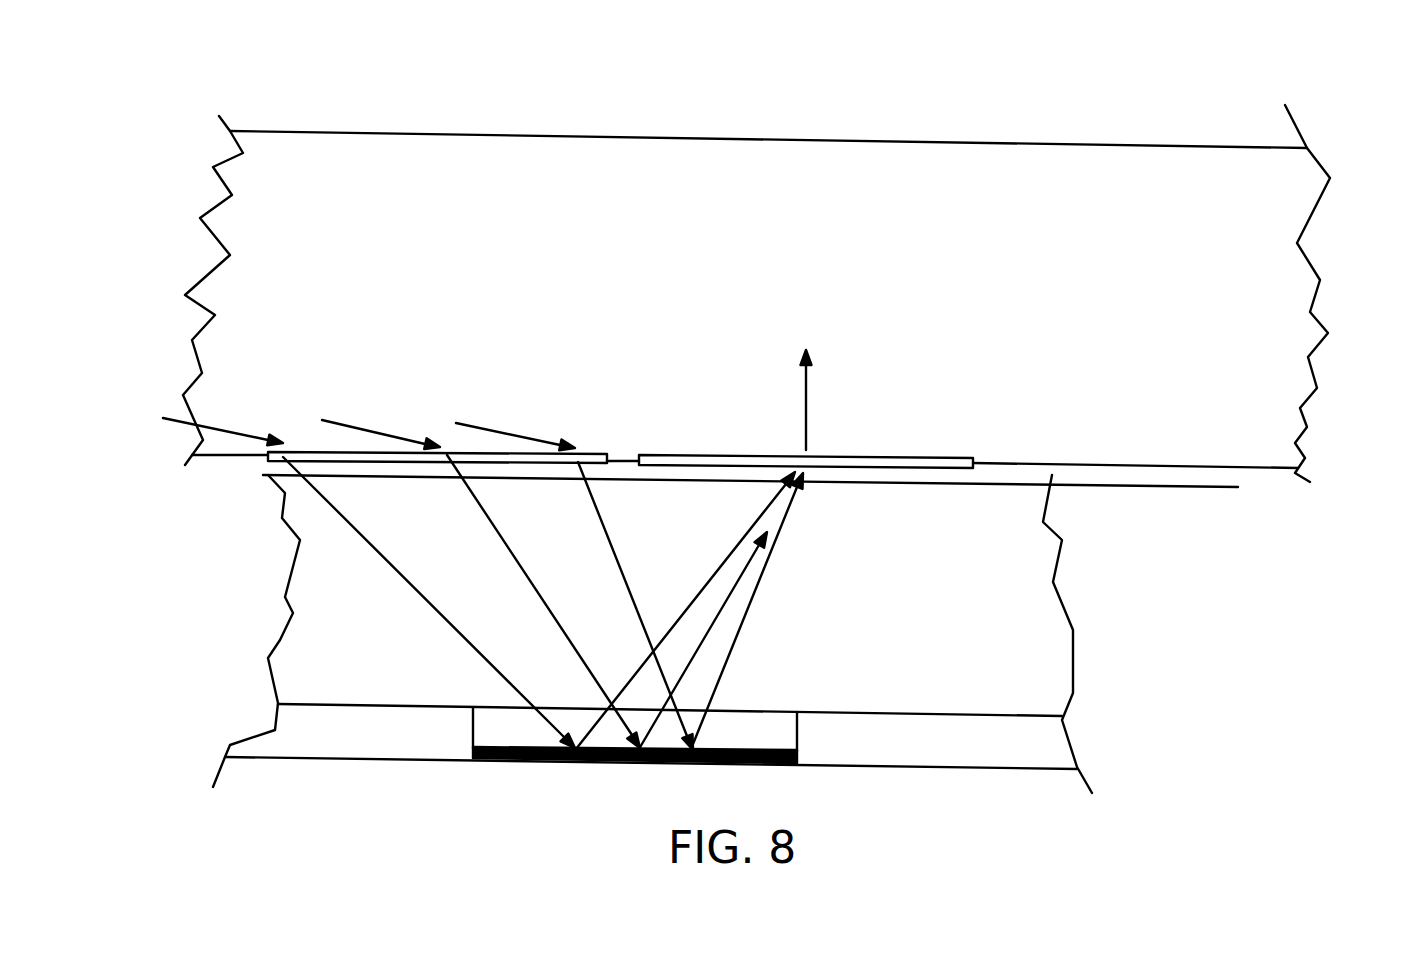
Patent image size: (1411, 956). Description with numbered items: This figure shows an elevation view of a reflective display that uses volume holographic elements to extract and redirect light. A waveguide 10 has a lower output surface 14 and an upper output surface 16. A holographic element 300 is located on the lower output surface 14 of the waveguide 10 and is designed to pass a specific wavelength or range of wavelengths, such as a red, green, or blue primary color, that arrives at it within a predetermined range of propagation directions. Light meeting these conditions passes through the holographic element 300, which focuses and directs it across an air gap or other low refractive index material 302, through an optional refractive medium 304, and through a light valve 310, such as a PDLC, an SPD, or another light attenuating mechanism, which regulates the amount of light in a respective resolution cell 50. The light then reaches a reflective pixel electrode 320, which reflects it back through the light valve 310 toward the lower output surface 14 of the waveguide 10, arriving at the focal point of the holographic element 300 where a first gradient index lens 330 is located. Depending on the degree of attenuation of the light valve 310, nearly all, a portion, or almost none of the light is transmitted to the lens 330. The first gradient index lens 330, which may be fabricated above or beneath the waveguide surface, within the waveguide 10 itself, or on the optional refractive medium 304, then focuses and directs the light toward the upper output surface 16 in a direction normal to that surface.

The waveguide 10 is at (1290, 302).
The lower output surface 14 is at (1145, 467).
The upper output surface 16 is at (1097, 143).
The resolution cell 50 is at (670, 193).
The holographic element 300 is at (347, 463).
The air gap or other low refractive index material 302 is at (275, 467).
The optional refractive medium 304 is at (338, 597).
The light valve 310 is at (485, 730).
The reflective pixel electrode 320 is at (458, 762).
The first gradient index lens 330 is at (882, 468).